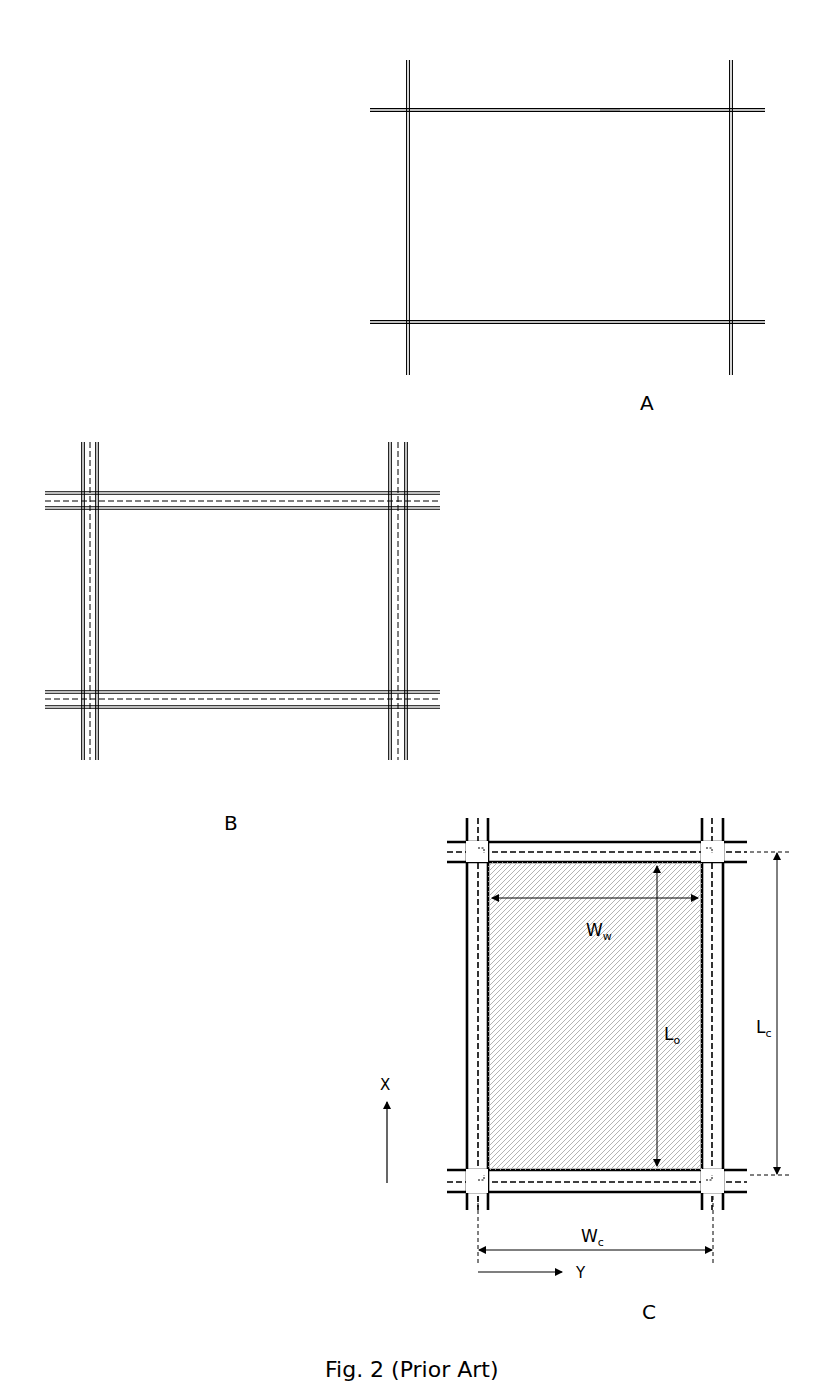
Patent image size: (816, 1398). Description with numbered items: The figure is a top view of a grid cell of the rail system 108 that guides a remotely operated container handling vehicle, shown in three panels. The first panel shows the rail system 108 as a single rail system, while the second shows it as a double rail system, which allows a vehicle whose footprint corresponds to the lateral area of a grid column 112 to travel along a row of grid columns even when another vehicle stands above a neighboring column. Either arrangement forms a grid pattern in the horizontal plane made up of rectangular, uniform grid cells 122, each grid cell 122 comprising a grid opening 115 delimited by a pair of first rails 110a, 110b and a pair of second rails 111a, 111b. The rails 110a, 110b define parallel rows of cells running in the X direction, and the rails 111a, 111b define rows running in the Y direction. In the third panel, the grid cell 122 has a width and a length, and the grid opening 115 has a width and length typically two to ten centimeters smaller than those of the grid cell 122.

The rail system 108 is at (496, 80).
The rail of the first rails 110a is at (490, 114).
The rail of the first rails 110b is at (603, 318).
The rail of the second set of rails 111a is at (412, 248).
The rail of the second set of rails 111b is at (728, 174).
The grid column 112 is at (612, 106).
The grid opening 115 is at (465, 689).
The grid cell 122 is at (210, 491).